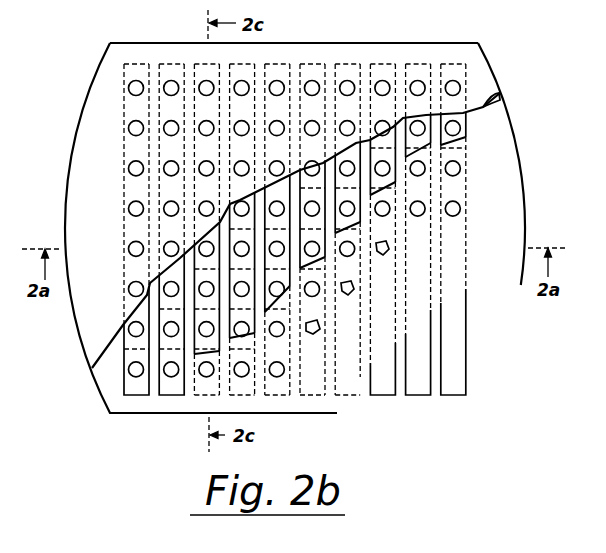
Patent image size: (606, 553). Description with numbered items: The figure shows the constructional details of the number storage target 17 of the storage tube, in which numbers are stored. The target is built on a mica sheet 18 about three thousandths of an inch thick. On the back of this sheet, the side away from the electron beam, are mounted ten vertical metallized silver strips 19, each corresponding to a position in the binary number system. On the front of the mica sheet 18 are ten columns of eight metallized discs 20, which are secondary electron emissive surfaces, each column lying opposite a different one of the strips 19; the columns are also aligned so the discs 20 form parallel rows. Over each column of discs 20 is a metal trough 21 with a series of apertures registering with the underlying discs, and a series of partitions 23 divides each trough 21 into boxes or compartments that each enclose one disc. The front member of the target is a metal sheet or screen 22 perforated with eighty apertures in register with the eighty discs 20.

The number storage target 17 is at (70, 158).
The mica sheet 18 is at (523, 185).
The metallized strips 19 is at (436, 417).
The metallized discs 20 is at (164, 373).
The metal trough 21 is at (121, 337).
The metal sheet or screen 22 is at (506, 97).
The partitions 23 is at (392, 186).